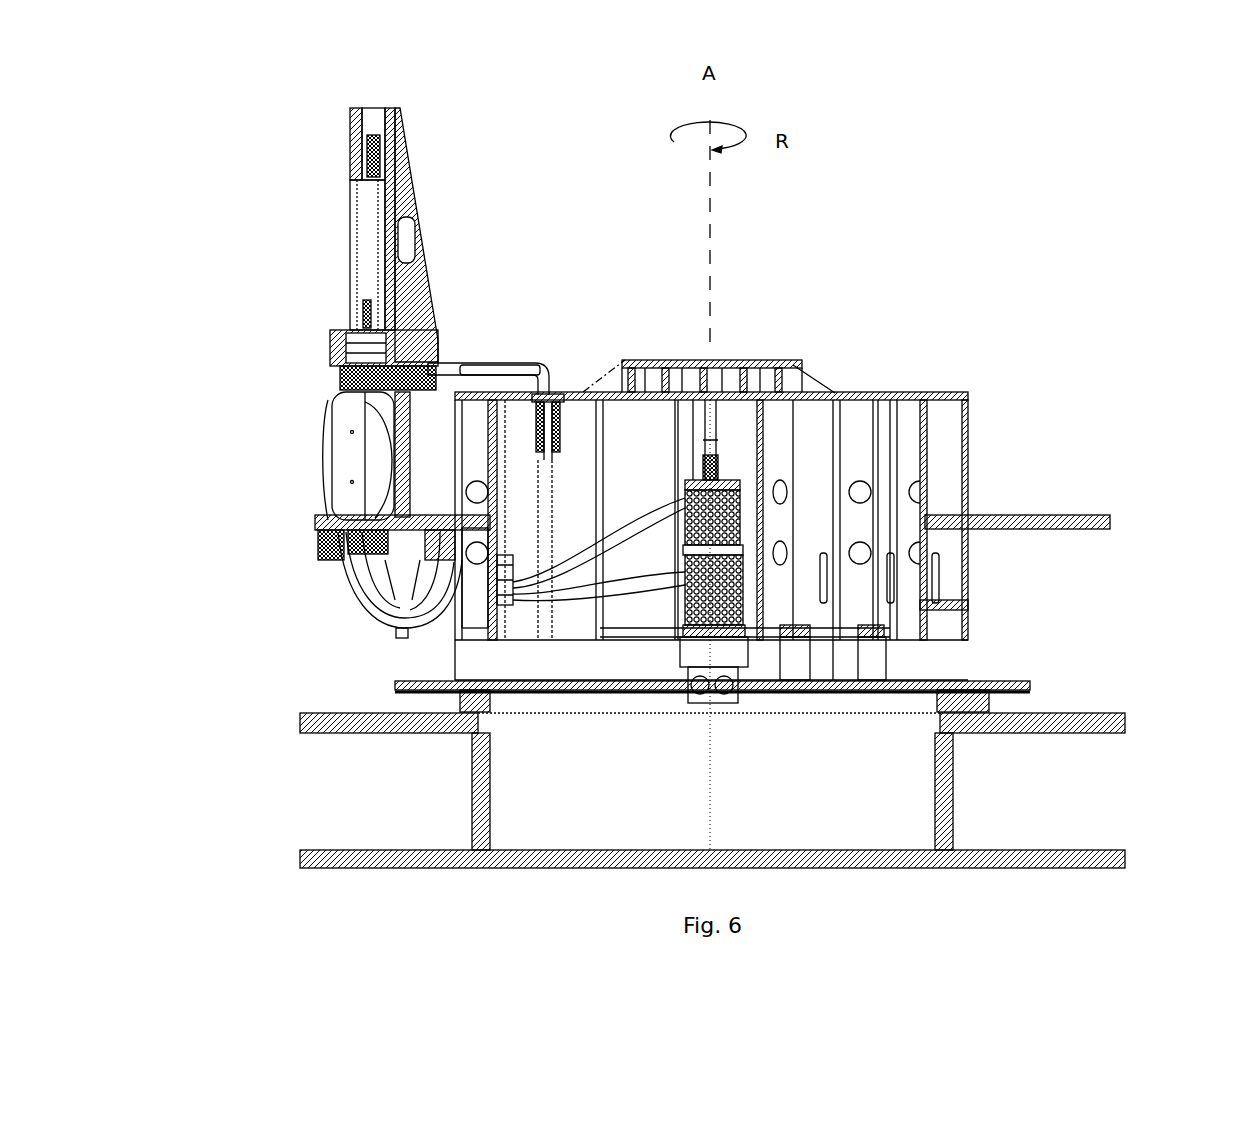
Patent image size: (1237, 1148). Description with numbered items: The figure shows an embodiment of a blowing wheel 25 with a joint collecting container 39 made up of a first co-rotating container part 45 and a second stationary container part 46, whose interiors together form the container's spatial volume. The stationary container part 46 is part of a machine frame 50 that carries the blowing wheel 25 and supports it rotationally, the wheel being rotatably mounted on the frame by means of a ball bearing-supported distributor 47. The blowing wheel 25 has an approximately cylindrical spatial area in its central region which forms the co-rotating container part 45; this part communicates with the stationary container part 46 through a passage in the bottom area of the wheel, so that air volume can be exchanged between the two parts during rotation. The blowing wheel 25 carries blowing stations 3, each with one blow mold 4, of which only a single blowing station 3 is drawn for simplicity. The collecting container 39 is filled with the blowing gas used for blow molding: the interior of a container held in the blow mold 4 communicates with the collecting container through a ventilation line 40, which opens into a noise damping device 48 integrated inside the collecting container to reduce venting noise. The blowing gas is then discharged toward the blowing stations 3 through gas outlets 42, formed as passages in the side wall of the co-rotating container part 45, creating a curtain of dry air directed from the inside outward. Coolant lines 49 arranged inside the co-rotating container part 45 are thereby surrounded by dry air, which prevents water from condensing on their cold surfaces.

The blowing station 3 is at (280, 477).
The blow mold 4 is at (333, 408).
The blowing wheel 25 is at (872, 331).
The collecting container 39 is at (660, 464).
The ventilation line 40 is at (490, 362).
The gas outlets 42 is at (868, 485).
The co-rotating container part 45 is at (1018, 488).
The stationary container part 46 is at (1076, 794).
The ball bearing-supported distributor 47 is at (1038, 698).
The noise damping device 48 is at (583, 392).
The coolant lines 49 is at (540, 620).
The machine frame 50 is at (476, 778).